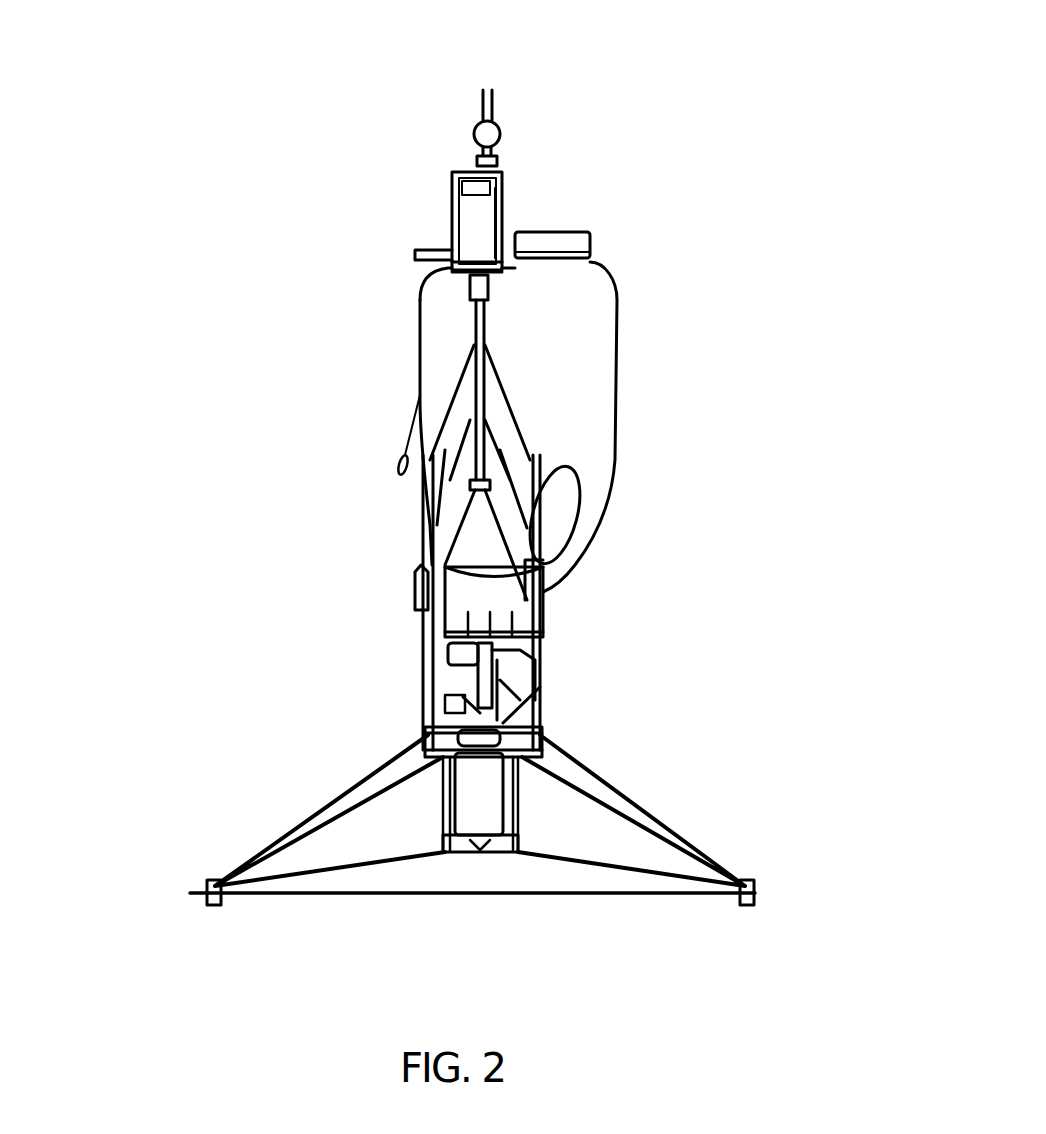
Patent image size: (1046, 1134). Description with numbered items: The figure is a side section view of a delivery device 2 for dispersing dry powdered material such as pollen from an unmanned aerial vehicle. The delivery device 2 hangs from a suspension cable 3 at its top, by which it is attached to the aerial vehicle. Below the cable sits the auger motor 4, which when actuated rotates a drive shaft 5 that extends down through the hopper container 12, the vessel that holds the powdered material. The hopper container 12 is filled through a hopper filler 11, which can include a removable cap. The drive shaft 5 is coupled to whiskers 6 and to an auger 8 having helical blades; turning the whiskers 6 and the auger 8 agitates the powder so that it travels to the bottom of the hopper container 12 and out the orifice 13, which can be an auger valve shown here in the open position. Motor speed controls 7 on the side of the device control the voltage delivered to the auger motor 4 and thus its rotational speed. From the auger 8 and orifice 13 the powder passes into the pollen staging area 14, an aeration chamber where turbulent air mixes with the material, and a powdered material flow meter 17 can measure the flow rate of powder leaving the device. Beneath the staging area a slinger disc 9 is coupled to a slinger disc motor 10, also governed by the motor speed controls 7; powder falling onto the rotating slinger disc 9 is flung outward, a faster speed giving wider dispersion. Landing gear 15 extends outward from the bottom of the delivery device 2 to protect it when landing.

The delivery device 2 is at (642, 90).
The suspension cable 3 is at (480, 103).
The auger motor 4 is at (450, 203).
The drive shaft 5 is at (468, 315).
The whiskers 6 is at (440, 407).
The motor speed controls 7 is at (413, 588).
The auger 8 is at (470, 697).
The slinger disc 9 is at (425, 737).
The slinger disc motor 10 is at (442, 812).
The hopper filler 11 is at (590, 238).
The hopper container 12 is at (612, 487).
The orifice 13 is at (533, 657).
The pollen staging area 14 is at (500, 713).
The landing gear 15 is at (208, 903).
The powdered material flow meter 17 is at (505, 670).